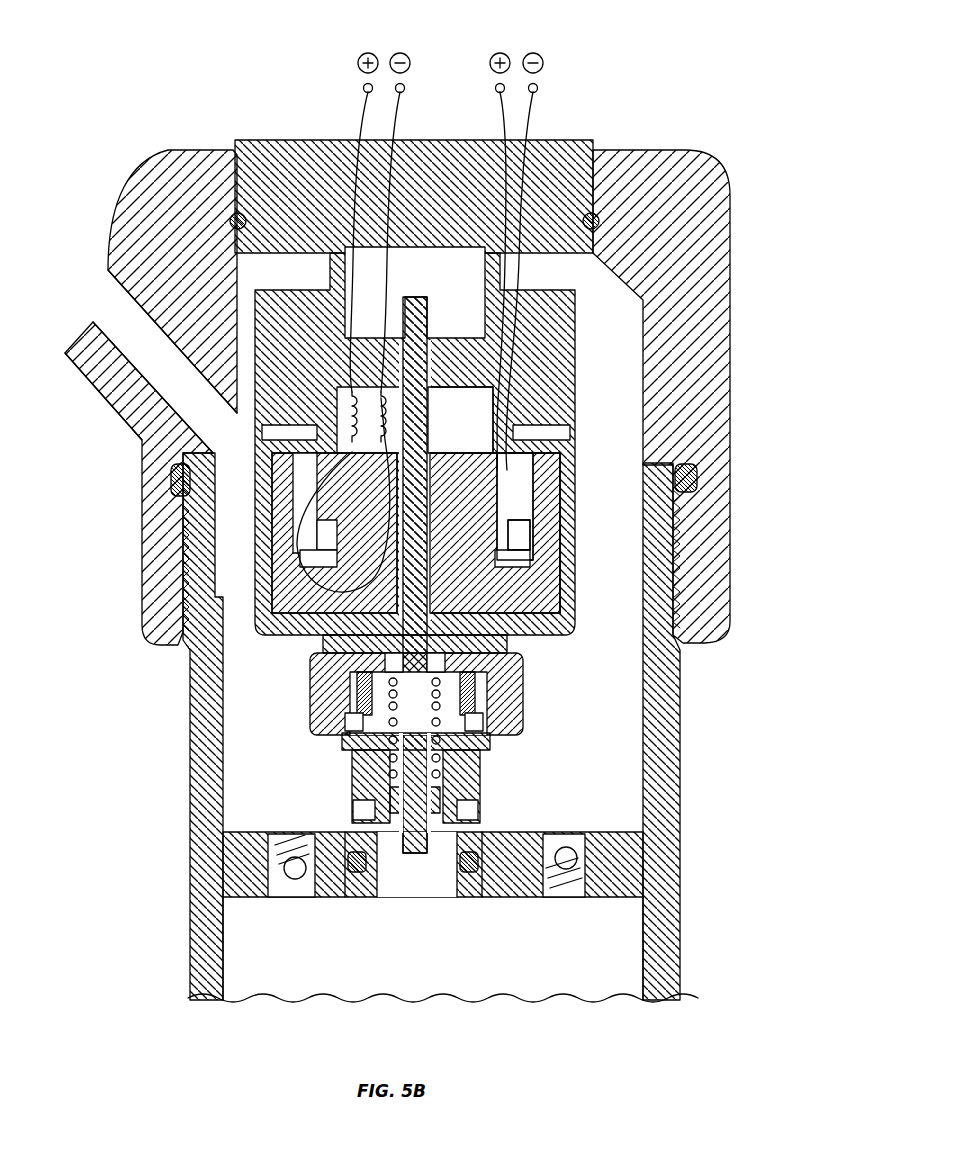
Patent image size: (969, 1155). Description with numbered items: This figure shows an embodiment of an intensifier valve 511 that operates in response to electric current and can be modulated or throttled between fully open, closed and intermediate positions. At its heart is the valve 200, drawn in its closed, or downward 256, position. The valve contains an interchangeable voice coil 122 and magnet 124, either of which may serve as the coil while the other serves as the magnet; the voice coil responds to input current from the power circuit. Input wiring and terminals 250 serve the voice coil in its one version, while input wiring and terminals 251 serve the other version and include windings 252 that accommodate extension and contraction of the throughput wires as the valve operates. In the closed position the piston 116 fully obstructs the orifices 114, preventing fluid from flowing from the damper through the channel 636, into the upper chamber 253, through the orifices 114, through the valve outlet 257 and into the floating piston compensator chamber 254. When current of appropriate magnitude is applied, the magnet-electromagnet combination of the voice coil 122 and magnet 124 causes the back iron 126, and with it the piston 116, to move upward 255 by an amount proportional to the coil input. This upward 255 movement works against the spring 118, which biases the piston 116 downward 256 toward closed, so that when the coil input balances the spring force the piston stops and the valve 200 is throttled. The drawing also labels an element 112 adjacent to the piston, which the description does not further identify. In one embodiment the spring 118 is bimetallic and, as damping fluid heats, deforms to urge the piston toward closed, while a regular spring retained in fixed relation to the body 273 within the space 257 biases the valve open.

The intensifier valve 511 is at (665, 101).
The input wiring and terminals 251 is at (415, 40).
The input wiring and terminals 250 is at (550, 40).
The valve 200 is at (508, 427).
The windings 252 is at (385, 434).
The channel 636 is at (160, 378).
The voice coil 122 is at (520, 480).
The magnet 124 is at (520, 512).
The back iron 126 is at (525, 585).
The upward direction 255 is at (810, 670).
The downward direction 256 is at (830, 770).
The upper chamber 253 is at (245, 745).
The piston 116 is at (368, 768).
The spring 118 is at (478, 755).
The valve body 112 is at (480, 770).
The orifices 114 is at (350, 812).
The body 273 is at (660, 885).
The valve outlet 257 is at (408, 878).
The floating piston compensator chamber 254 is at (492, 965).